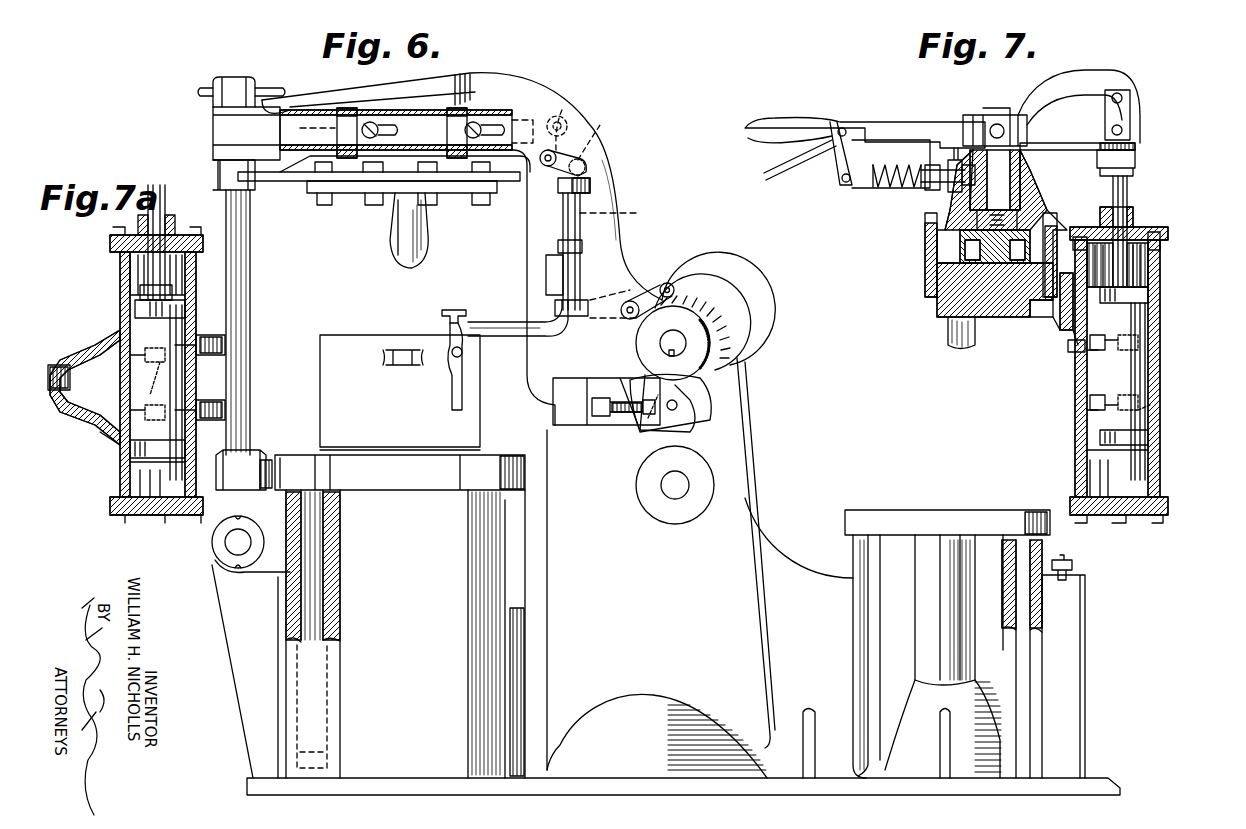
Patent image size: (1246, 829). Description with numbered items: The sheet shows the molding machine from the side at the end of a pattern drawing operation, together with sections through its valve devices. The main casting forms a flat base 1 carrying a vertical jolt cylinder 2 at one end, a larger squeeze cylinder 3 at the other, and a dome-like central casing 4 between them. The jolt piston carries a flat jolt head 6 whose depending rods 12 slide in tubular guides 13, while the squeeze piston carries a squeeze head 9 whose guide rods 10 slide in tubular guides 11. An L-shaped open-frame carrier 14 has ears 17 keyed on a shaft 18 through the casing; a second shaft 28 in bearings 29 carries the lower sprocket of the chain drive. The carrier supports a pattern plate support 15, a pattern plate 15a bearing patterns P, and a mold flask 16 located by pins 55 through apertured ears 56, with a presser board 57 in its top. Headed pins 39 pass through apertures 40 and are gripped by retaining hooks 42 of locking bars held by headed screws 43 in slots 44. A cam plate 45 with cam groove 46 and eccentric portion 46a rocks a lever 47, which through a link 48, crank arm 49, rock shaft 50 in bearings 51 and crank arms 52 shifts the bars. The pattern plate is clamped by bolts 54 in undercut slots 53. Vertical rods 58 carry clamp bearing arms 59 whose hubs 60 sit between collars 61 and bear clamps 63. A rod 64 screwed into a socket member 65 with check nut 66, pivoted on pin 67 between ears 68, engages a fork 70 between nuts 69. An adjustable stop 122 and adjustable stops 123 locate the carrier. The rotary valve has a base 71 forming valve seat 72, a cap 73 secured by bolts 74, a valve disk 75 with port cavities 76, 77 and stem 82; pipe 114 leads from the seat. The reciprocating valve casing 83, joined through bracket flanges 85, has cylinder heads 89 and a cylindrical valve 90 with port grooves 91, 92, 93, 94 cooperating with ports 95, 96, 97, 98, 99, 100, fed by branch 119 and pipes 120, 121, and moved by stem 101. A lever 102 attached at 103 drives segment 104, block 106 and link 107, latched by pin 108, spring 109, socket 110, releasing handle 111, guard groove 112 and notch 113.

In FIG. 6, the base 1 is at (552, 780).
In FIG. 6, the jolt cylinder 2 is at (880, 555).
In FIG. 6, the squeeze cylinder 3 is at (490, 580).
In FIG. 6, the central casing 4 is at (772, 470).
In FIG. 6, the jolt head 6 is at (955, 510).
In FIG. 6, the squeeze head 9 is at (497, 475).
In FIG. 6, the guide rods 10 is at (310, 532).
In FIG. 6, the tubular guides 11 is at (335, 575).
In FIG. 6, the depending rods 12 is at (1022, 555).
In FIG. 6, the tubular guides 13 is at (1032, 607).
In FIG. 6, the carrier 14 is at (619, 195).
In FIG. 6, the pattern plate support 15 is at (300, 181).
In FIG. 6, the pattern plate 15a is at (345, 193).
In FIG. 6, the mold flask 16 is at (330, 372).
In FIG. 6, the ears 17 is at (650, 395).
In FIG. 6, the shaft 18 is at (680, 340).
In FIG. 6, the shaft 28 is at (680, 488).
In FIG. 6, the bearings 29 is at (668, 512).
In FIG. 6, the headed pins 39 is at (330, 128).
In FIG. 6, the apertures 40 is at (275, 128).
In FIG. 6, the retaining hooks 42 is at (300, 95).
In FIG. 6, the headed screws 43 is at (347, 108).
In FIG. 6, the slots 44 is at (372, 122).
In FIG. 6, the cam plate 45 is at (716, 300).
In FIG. 6, the cam groove 46 is at (705, 318).
In FIG. 6, the eccentric portion 46a is at (708, 398).
In FIG. 6, the lever 47 is at (640, 302).
In FIG. 6, the link 48 is at (623, 211).
In FIG. 6, the crank arm 49 is at (583, 155).
In FIG. 6, the rock shaft 50 is at (545, 165).
In FIG. 6, the bearings 51 is at (580, 172).
In FIG. 6, the crank arms 52 is at (588, 118).
In FIG. 6, the undercut slots 53 is at (320, 172).
In FIG. 6, the bolts 54 is at (325, 205).
In FIG. 6, the pins 55 is at (398, 225).
In FIG. 6, the apertured ears 56 is at (392, 350).
In FIG. 6, the presser board 57 is at (410, 450).
In FIG. 6, the vertical rods 58 is at (563, 222).
In FIG. 6, the clamp bearing arms 59 is at (503, 322).
In FIG. 6, the hub 60 is at (546, 290).
In FIG. 6, the collars 61 is at (582, 245).
In FIG. 6, the clamps 63 is at (456, 310).
In FIG. 6, the rod 64 is at (252, 310).
In FIG. 6, the socket member 65 is at (250, 488).
In FIG. 6, the check nut 66 is at (268, 460).
In FIG. 6, the pin 67 is at (236, 541).
In FIG. 6, the ears 68 is at (225, 570).
In FIG. 6, the nuts 69 is at (222, 80).
In FIG. 6, the fork 70 is at (213, 122).
In FIG. 7, the base 71 is at (985, 295).
In FIG. 7, the valve seat 72 is at (1020, 280).
In FIG. 7, the cap 73 is at (1012, 232).
In FIG. 7, the bolts 74 is at (925, 218).
In FIG. 7, the rotary valve disk 75 is at (1025, 250).
In FIG. 7, the port cavity 76 is at (965, 245).
In FIG. 7, the port cavity 77 is at (1025, 245).
In FIG. 7, the operating stem 82 is at (995, 175).
In FIG. 7, the valve casing 83 is at (1160, 362).
In FIG. 7A, the valve casing 83 is at (120, 290).
In FIG. 7, the bracket flanges 85 is at (1060, 345).
In FIG. 7, the cylinder heads 89 is at (1165, 232).
In FIG. 7A, the cylinder heads 89 is at (135, 225).
In FIG. 7, the cylindrical valve 90 is at (1148, 418).
In FIG. 7A, the cylindrical valve 90 is at (135, 310).
In FIG. 7, the port groove 91 is at (1130, 312).
In FIG. 7A, the port groove 91 is at (180, 318).
In FIG. 7, the port groove 92 is at (1145, 440).
In FIG. 7A, the port groove 92 is at (138, 455).
In FIG. 7, the port groove 93 is at (1120, 350).
In FIG. 7A, the port groove 93 is at (152, 362).
In FIG. 7, the port groove 94 is at (1120, 395).
In FIG. 7A, the port groove 94 is at (165, 405).
In FIG. 7A, the port 95 is at (100, 340).
In FIG. 7, the port 96 is at (1155, 345).
In FIG. 7A, the port 96 is at (200, 335).
In FIG. 7, the port 97 is at (1080, 352).
In FIG. 7A, the port 97 is at (144, 378).
In FIG. 7A, the port 98 is at (115, 438).
In FIG. 7, the port 99 is at (1150, 410).
In FIG. 7A, the port 99 is at (200, 400).
In FIG. 7, the port 100 is at (1085, 420).
In FIG. 7A, the port 100 is at (130, 445).
In FIG. 7, the operating stem 101 is at (1128, 255).
In FIG. 7A, the operating stem 101 is at (150, 262).
In FIG. 7, the lever 102 is at (900, 122).
In FIG. 7, the pivotal attachment 103 is at (997, 124).
In FIG. 7, the arcuate segment 104 is at (1075, 143).
In FIG. 7, the block 106 is at (1138, 165).
In FIG. 7, the pivoted link connection 107 is at (1130, 120).
In FIG. 7, the latch pin 108 is at (966, 162).
In FIG. 7, the spring 109 is at (880, 192).
In FIG. 7, the keeper socket 110 is at (945, 185).
In FIG. 7, the releasing handle 111 is at (790, 166).
In FIG. 7, the guard groove 112 is at (925, 172).
In FIG. 7, the notch 113 is at (955, 148).
In FIG. 7, the pipe 114 is at (952, 345).
In FIG. 7A, the branch 119 is at (58, 365).
In FIG. 7A, the pipe 120 is at (210, 355).
In FIG. 7A, the pipe 121 is at (212, 420).
In FIG. 6, the adjustable stop 122 is at (1075, 563).
In FIG. 6, the adjustable stops 123 is at (600, 418).
In FIG. 6, the patterns P is at (409, 230).